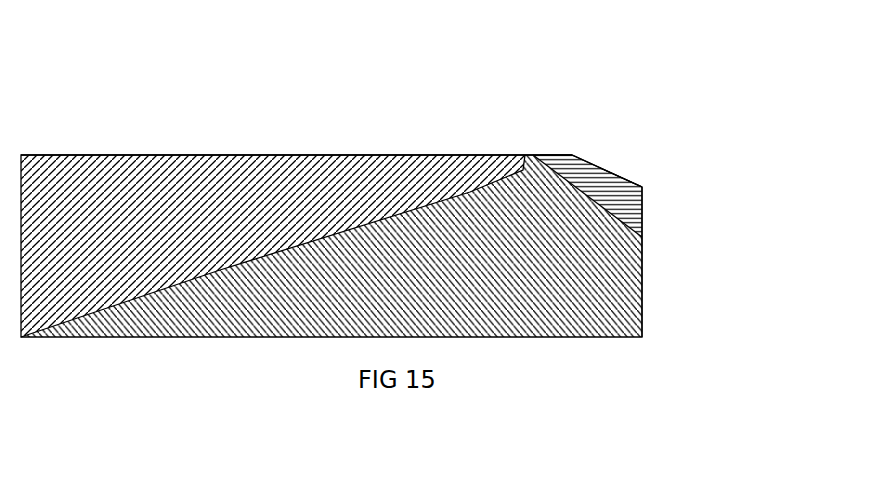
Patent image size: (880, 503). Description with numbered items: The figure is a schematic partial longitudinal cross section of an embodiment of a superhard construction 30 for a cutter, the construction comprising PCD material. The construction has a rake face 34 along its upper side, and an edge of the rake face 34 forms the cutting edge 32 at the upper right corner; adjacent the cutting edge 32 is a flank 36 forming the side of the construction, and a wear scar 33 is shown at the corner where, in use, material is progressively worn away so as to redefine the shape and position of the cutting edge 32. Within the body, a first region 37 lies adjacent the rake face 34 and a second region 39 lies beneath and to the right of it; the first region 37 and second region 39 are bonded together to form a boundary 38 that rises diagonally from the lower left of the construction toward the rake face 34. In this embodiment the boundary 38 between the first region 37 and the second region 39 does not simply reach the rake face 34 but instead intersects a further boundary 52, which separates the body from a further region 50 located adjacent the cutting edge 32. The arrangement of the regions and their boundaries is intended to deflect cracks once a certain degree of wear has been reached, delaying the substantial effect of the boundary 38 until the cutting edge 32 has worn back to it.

The superhard construction 30 is at (130, 95).
The cutting edge 32 is at (571, 155).
The wear scar 33 is at (604, 169).
The rake face 34 is at (502, 132).
The flank 36 is at (675, 185).
The first region 37 is at (302, 178).
The boundary 38 is at (400, 212).
The second region 39 is at (548, 263).
The further region 50 is at (603, 218).
The further boundary 52 is at (636, 185).